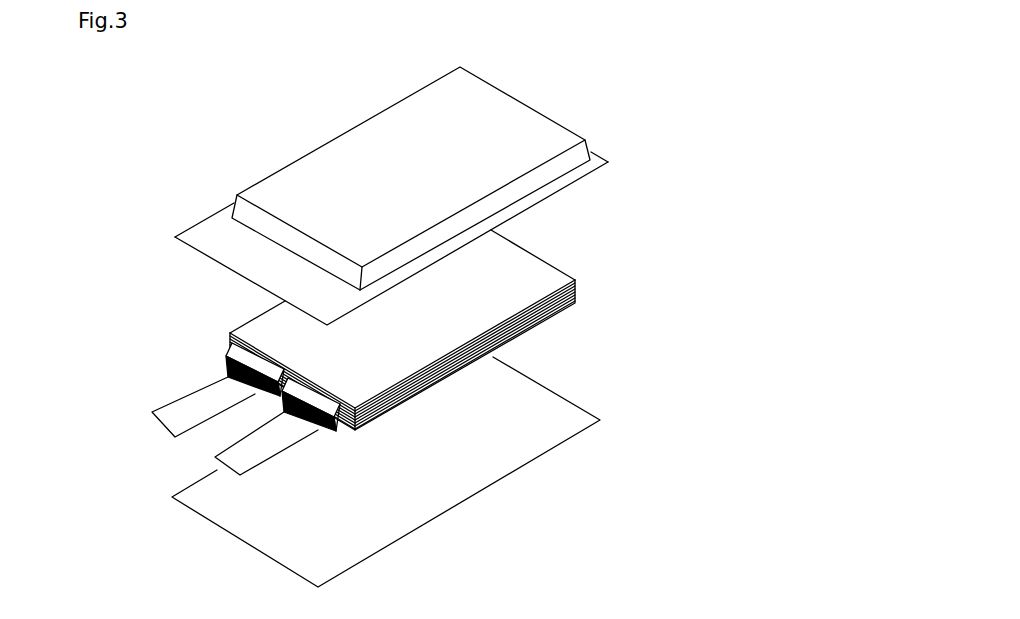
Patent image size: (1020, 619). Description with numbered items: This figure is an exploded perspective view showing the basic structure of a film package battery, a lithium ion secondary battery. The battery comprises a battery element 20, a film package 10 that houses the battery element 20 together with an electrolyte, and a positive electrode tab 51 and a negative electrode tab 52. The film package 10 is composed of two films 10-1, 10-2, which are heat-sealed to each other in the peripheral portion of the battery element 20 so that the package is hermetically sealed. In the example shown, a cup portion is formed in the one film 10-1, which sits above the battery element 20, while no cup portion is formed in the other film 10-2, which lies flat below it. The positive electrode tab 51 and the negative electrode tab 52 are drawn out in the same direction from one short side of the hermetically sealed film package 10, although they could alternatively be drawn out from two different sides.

The film package 10 is at (403, 190).
The film 10-1 is at (566, 131).
The film 10-2 is at (560, 447).
The battery element 20 is at (545, 254).
The positive electrode tab 51 is at (151, 412).
The negative electrode tab 52 is at (214, 457).